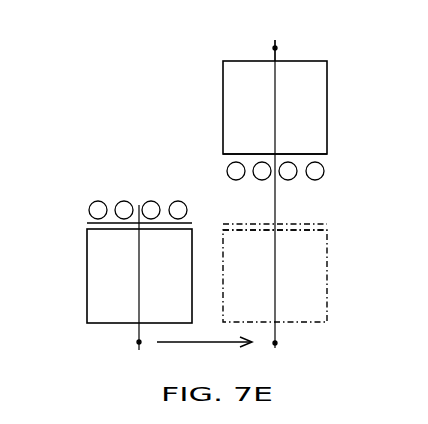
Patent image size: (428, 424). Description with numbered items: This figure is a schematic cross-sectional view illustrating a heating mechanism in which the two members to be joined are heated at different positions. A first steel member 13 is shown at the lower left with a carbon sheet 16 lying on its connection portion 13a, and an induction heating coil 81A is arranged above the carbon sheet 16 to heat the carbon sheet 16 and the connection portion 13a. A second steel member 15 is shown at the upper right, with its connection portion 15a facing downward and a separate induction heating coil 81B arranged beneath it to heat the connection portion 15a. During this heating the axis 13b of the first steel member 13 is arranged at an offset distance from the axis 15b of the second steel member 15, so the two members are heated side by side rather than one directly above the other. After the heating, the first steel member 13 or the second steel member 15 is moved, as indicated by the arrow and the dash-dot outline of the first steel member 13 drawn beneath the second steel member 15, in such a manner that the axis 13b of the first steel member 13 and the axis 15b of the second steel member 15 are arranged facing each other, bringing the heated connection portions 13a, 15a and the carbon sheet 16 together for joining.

The first steel member 13 is at (98, 272).
The connection portion of the first steel member 13a is at (317, 243).
The axis of the first steel member 13b is at (139, 342).
The second steel member 15 is at (317, 100).
The connection portion of the second steel member 15a is at (320, 144).
The axis of the second steel member 15b is at (275, 48).
The carbon sheet 16 is at (310, 223).
The induction heating coil 81A is at (98, 212).
The induction heating coil 81B is at (315, 173).